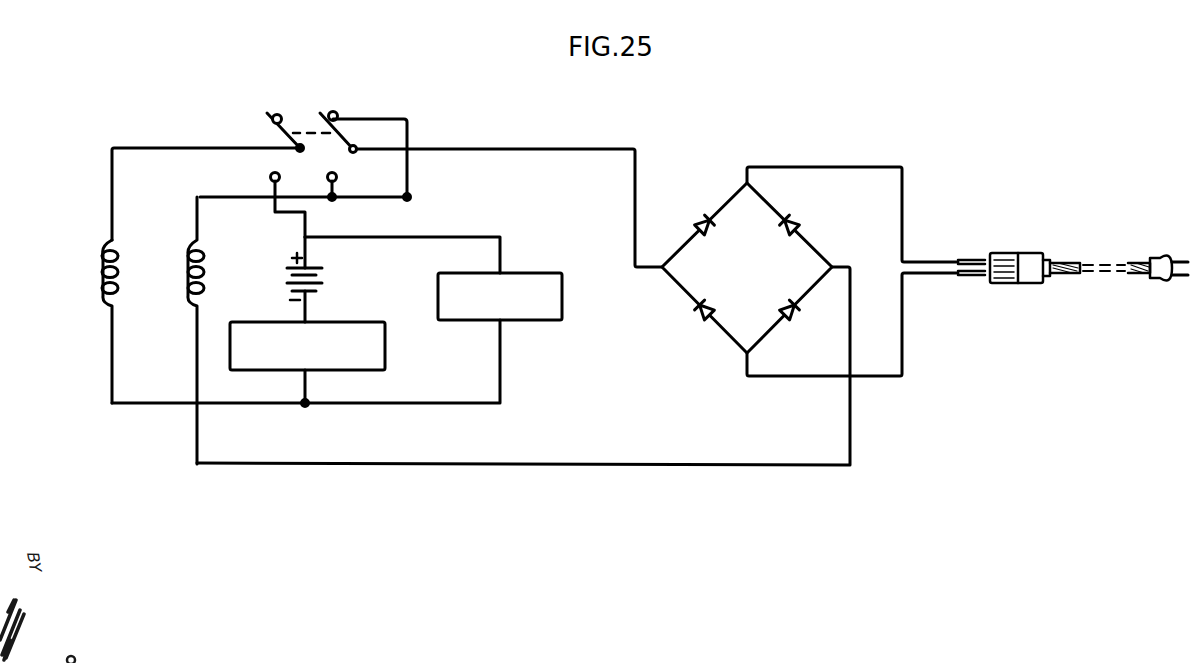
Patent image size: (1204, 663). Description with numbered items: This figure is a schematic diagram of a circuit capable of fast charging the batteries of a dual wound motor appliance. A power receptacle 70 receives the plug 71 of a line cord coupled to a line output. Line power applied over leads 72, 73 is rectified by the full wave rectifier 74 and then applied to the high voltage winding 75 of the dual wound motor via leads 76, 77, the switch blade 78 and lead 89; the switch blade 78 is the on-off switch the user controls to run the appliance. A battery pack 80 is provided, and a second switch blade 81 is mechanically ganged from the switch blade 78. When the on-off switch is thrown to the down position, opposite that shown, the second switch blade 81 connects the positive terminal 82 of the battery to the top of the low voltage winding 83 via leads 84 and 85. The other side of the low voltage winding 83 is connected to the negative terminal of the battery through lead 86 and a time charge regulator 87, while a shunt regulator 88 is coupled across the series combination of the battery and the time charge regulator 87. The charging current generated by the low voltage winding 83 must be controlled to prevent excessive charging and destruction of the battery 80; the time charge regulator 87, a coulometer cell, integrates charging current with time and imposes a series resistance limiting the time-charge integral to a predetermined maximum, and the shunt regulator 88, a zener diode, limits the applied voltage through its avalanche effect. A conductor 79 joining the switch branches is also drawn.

The power receptacle 70 is at (1081, 245).
The plug 71 is at (1035, 253).
The lead 72 is at (902, 327).
The lead 73 is at (902, 205).
The full wave rectifier 74 is at (685, 300).
The high voltage winding 75 is at (186, 283).
The lead 76 is at (580, 148).
The lead 77 is at (681, 468).
The switch blade 78 is at (361, 138).
The conductor 79 is at (408, 185).
The battery pack 80 is at (325, 279).
The second switch blade 81 is at (290, 133).
The positive terminal 82 is at (305, 237).
The low voltage winding 83 is at (100, 252).
The lead 84 is at (272, 203).
The lead 85 is at (181, 148).
The lead 86 is at (233, 404).
The time charge regulator 87 is at (385, 357).
The shunt regulator 88 is at (538, 321).
The lead 89 is at (338, 187).